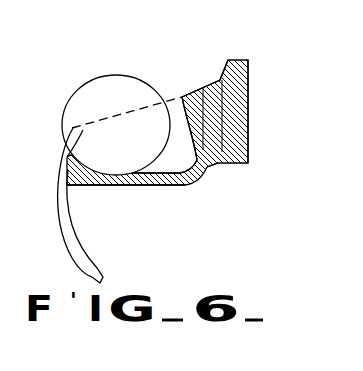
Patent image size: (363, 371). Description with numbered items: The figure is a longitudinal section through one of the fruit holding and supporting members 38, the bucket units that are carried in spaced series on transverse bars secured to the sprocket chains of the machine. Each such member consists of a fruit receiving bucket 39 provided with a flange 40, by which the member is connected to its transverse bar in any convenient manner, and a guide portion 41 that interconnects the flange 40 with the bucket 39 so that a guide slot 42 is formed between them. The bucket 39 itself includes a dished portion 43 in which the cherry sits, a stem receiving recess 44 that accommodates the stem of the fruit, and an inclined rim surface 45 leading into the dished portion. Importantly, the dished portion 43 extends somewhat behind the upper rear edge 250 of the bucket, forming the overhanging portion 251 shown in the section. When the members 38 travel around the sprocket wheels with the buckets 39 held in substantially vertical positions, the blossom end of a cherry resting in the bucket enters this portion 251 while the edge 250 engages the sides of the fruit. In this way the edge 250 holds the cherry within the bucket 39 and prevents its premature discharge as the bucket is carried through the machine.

The fruit holding and supporting member 38 is at (209, 184).
The fruit receiving bucket 39 is at (138, 186).
The flange 40 is at (249, 84).
The guide portion 41 is at (220, 80).
The guide slot 42 is at (230, 134).
The dished portion 43 is at (173, 173).
The stem receiving recess 44 is at (62, 151).
The inclined rim surface 45 is at (178, 96).
The upper rear edge 250 is at (182, 98).
The portion behind upper rear edge 251 is at (208, 168).